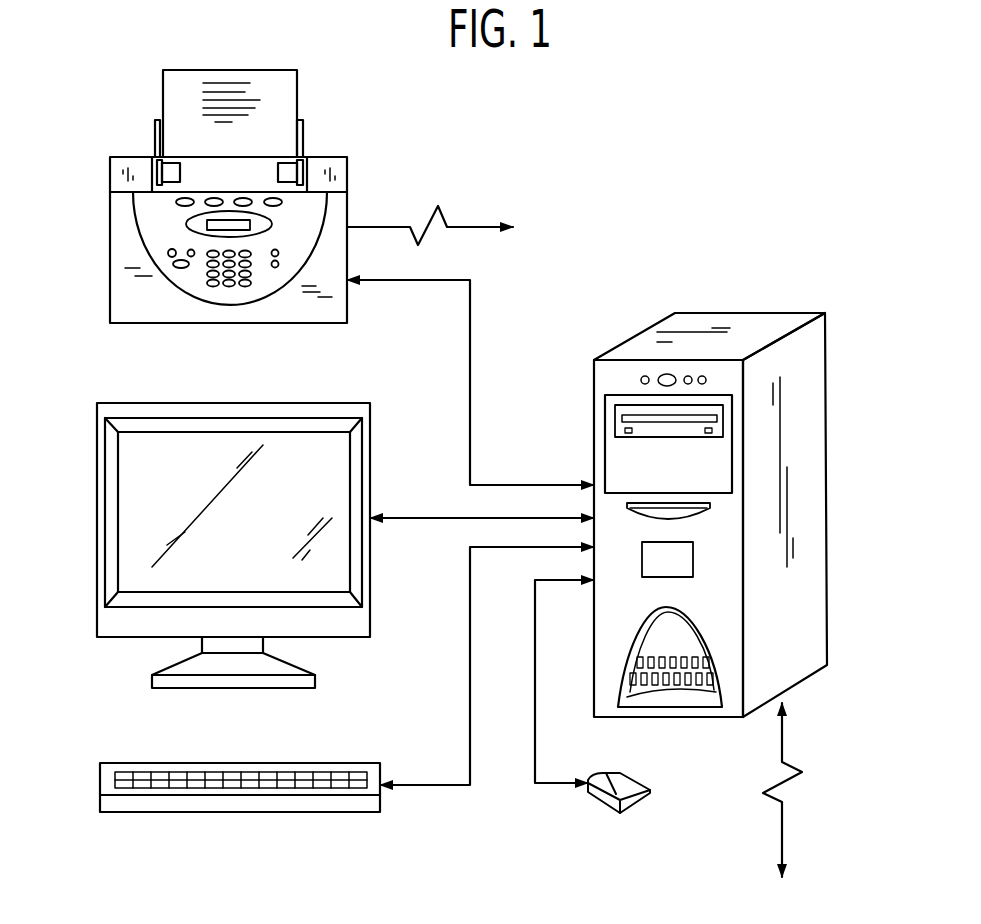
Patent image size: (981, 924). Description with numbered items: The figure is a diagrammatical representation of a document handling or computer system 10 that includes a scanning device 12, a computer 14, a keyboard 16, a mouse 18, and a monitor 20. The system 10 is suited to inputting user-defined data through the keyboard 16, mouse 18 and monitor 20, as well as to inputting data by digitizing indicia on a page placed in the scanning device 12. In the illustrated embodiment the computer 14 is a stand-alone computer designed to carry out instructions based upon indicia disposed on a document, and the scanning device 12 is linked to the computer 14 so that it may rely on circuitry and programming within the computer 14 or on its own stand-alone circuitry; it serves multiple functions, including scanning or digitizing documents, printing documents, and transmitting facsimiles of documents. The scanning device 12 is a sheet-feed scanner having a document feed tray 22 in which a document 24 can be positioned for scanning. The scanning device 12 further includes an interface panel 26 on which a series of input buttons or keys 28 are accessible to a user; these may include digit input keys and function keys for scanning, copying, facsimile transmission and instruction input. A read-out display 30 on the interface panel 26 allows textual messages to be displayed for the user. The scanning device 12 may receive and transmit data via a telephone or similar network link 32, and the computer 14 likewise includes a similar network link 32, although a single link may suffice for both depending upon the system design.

The computer system 10 is at (673, 197).
The scanning device 12 is at (223, 216).
The computer 14 is at (775, 310).
The keyboard 16 is at (120, 810).
The mouse 18 is at (640, 803).
The monitor 20 is at (97, 465).
The document feed tray 22 is at (303, 147).
The document 24 is at (285, 110).
The interface panel 26 is at (130, 290).
The input buttons or keys 28 is at (245, 287).
The read-out display 30 is at (207, 225).
The network link 32 is at (443, 215).